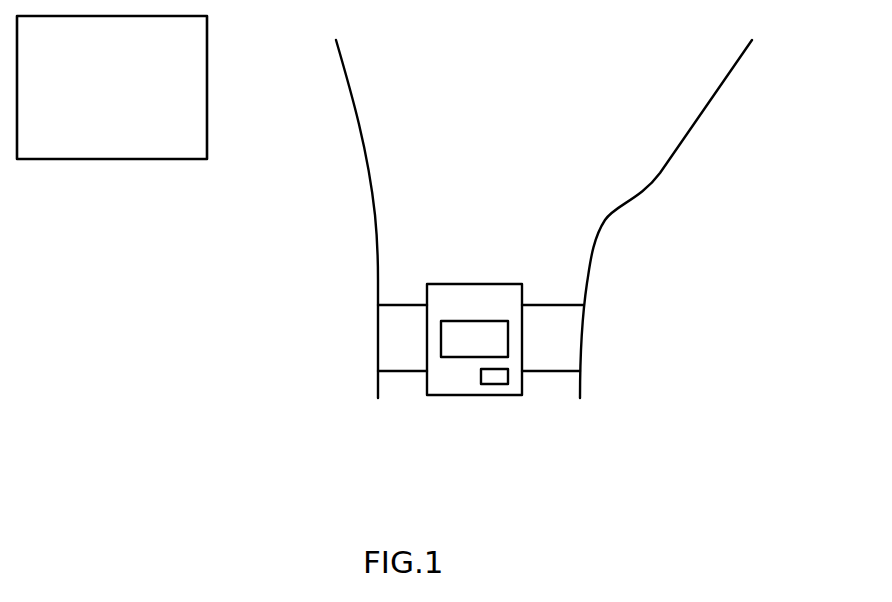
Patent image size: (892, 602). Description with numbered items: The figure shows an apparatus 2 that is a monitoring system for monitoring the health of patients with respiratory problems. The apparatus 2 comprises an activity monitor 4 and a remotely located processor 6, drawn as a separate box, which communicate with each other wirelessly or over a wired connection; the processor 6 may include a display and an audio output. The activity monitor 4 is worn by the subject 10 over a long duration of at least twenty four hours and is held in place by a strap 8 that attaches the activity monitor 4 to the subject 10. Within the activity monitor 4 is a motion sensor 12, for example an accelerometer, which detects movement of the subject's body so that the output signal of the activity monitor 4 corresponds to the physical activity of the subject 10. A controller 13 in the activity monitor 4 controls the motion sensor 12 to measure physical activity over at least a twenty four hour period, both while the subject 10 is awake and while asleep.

The apparatus 2 is at (159, 415).
The activity monitor 4 is at (440, 395).
The processor 6 is at (86, 159).
The strap 8 is at (400, 371).
The subject 10 is at (589, 283).
The motion sensor 12 is at (441, 328).
The controller 13 is at (495, 384).